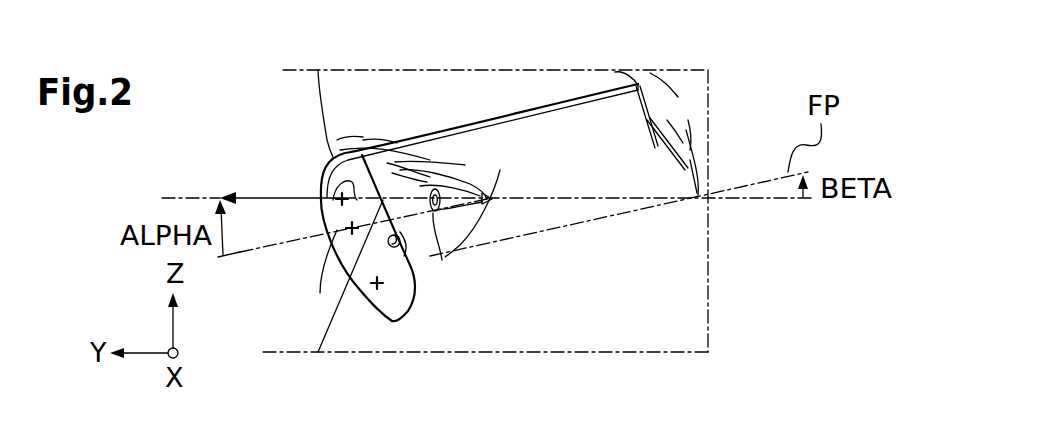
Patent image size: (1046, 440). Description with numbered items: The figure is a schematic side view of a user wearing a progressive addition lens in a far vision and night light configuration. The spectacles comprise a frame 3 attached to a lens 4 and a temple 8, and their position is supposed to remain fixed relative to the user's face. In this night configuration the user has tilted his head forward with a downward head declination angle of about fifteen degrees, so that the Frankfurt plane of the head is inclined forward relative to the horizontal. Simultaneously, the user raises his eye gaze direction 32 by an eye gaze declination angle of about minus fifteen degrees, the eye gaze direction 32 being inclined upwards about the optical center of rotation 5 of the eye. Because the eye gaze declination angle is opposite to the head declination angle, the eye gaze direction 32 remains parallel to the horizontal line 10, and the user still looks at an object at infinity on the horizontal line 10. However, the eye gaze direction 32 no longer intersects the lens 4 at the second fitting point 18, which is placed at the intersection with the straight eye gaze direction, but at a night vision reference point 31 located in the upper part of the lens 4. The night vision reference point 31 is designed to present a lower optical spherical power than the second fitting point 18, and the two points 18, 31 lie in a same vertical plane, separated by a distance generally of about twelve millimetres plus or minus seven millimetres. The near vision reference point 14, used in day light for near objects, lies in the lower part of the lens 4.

The frame 3 is at (333, 152).
The lens 4 is at (411, 279).
The optical center of rotation 5 is at (492, 187).
The temple 8 is at (583, 100).
The horizontal line 10 is at (183, 197).
The near vision reference point 14 is at (373, 287).
The second fitting point 18 is at (349, 229).
The night vision reference point 31 is at (338, 201).
The eye gaze direction 32 is at (252, 197).